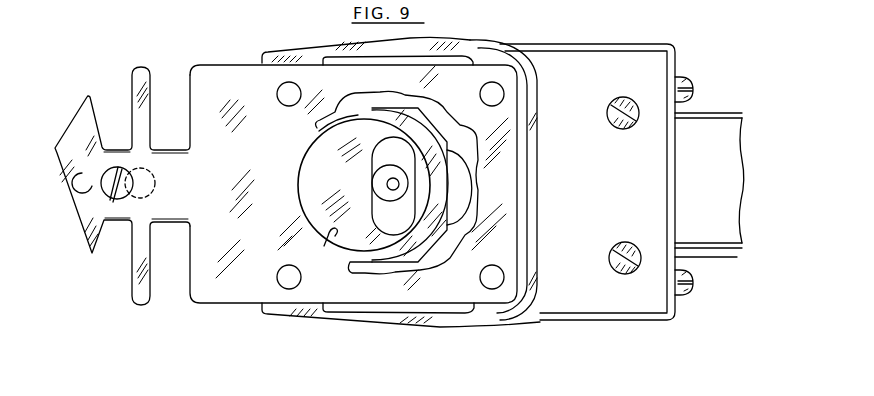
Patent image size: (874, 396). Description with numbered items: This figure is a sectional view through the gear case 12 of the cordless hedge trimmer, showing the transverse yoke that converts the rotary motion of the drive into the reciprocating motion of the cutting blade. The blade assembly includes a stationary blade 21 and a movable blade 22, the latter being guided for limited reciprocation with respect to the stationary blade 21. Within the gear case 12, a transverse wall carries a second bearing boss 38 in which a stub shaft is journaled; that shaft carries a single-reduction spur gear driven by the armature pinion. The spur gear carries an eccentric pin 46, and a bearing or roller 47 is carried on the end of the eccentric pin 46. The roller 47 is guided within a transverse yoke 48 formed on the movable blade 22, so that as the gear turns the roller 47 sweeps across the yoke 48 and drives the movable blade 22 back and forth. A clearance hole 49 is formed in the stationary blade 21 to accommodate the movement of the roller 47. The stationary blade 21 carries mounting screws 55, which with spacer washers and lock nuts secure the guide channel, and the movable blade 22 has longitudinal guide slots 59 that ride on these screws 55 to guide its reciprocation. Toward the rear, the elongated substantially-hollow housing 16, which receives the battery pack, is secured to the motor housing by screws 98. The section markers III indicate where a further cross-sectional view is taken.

The gear case 12 is at (303, 53).
The elongated substantially-hollow housing 16 is at (737, 245).
The stationary blade 21 is at (138, 72).
The movable blade 22 is at (75, 113).
The second bearing boss 38 is at (460, 190).
The eccentric pin 46 is at (393, 184).
The roller 47 is at (376, 183).
The transverse yoke 48 is at (382, 212).
The clearance hole 49 is at (326, 246).
The mounting screws 55 is at (107, 190).
The longitudinal guide slots 59 is at (77, 182).
The screws 98 is at (692, 82).
The section line III is at (613, 102).